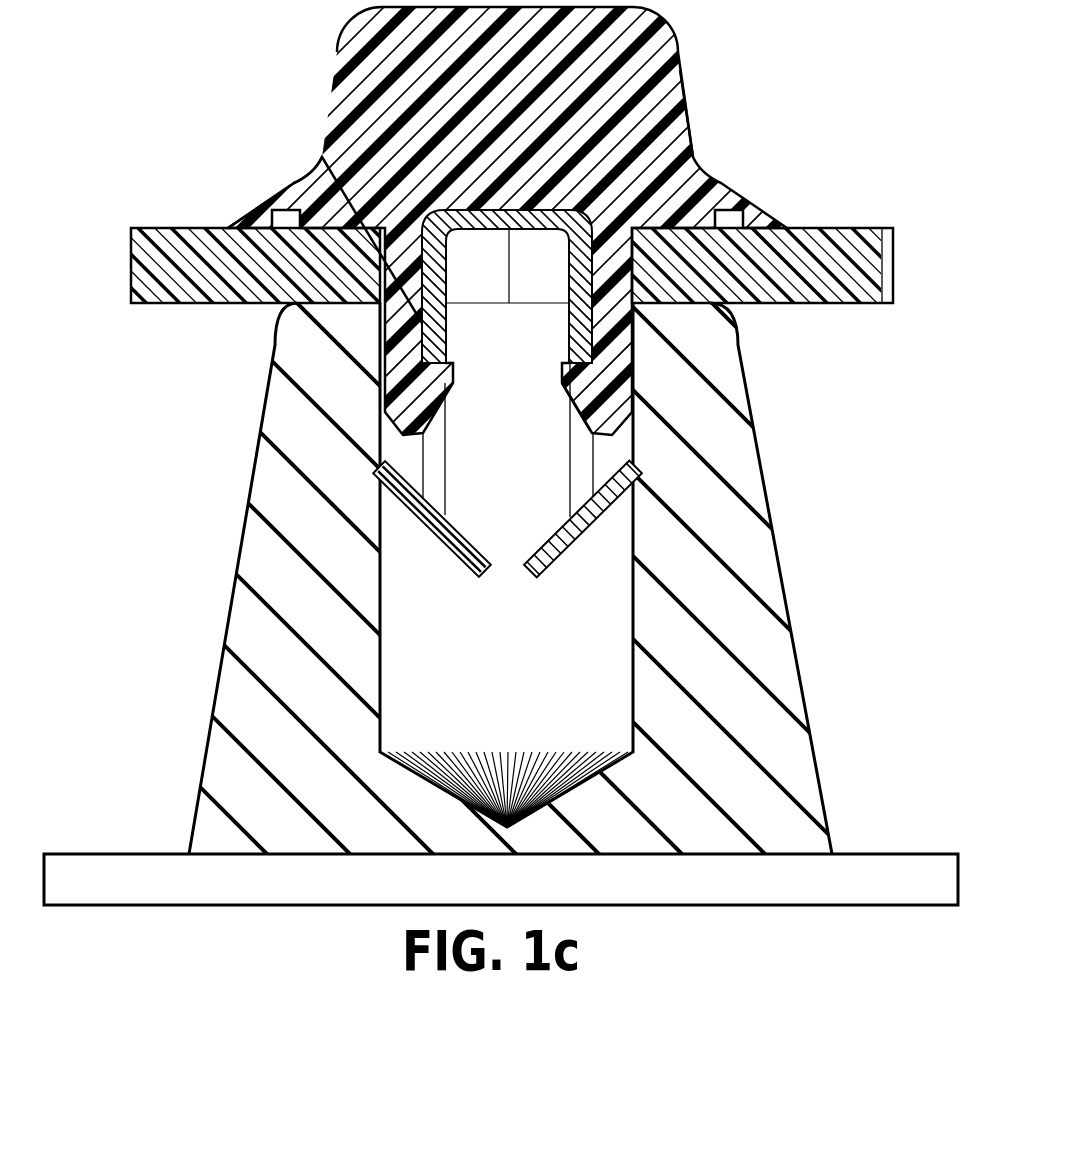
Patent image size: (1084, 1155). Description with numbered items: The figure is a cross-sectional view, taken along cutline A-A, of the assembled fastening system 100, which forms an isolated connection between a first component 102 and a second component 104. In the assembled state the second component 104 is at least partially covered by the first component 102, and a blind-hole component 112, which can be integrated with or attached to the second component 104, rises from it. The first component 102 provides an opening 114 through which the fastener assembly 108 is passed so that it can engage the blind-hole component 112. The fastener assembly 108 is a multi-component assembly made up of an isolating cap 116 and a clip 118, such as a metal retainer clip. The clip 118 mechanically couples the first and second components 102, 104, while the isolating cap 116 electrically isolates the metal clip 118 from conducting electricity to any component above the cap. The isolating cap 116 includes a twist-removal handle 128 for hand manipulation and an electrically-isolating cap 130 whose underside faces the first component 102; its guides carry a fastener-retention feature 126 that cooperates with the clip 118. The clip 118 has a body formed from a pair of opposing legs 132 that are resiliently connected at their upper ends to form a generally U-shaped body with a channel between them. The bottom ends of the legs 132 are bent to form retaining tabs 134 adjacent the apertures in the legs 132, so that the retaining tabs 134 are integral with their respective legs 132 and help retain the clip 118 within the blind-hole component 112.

The fastening system 100 is at (98, 48).
The first component 102 is at (860, 226).
The second component 104 is at (945, 853).
The fastener assembly 108 is at (540, 288).
The blind-hole component 112 is at (520, 577).
The opening 114 is at (372, 315).
The isolating cap 116 is at (691, 69).
The clip 118 is at (560, 323).
The fastener-retention feature 126 is at (565, 388).
The twist-removal handle 128 is at (691, 110).
The electrically-isolating cap 130 is at (267, 195).
The legs 132 is at (573, 457).
The retaining tabs 134 is at (562, 524).